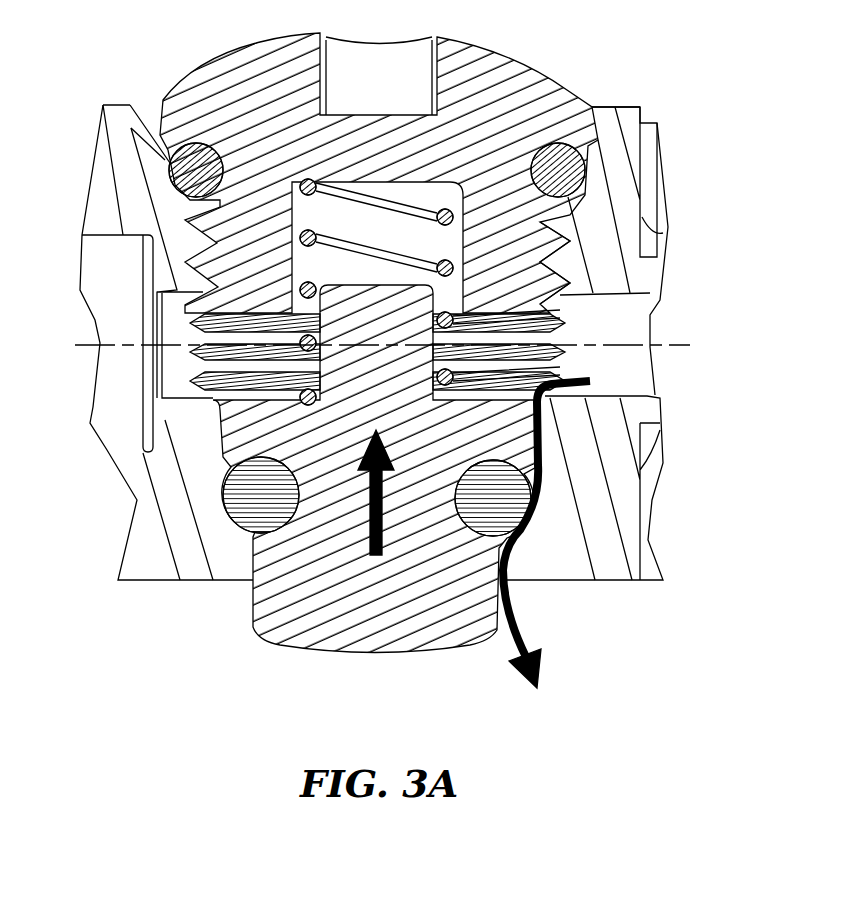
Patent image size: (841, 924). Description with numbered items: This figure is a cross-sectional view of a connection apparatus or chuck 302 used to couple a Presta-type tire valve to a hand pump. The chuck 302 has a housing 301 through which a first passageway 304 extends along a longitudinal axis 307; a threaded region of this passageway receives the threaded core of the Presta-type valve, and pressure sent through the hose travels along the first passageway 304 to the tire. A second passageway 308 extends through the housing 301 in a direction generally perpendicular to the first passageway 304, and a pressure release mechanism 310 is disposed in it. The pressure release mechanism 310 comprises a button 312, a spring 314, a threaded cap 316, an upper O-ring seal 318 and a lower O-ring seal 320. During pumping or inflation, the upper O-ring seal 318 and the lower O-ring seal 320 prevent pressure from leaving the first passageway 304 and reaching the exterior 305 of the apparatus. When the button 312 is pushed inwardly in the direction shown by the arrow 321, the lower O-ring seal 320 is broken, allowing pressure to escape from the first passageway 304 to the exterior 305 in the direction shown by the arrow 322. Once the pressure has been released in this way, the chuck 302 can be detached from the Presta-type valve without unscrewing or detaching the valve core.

The housing 301 is at (613, 157).
The connection apparatus or chuck 302 is at (641, 61).
The first passageway 304 is at (637, 380).
The exterior 305 is at (394, 747).
The longitudinal axis 307 is at (672, 345).
The second passageway 308 is at (537, 235).
The pressure release mechanism 310 is at (183, 663).
The button 312 is at (303, 645).
The spring 314 is at (430, 200).
The threaded cap 316 is at (242, 66).
The upper O-ring seal 318 is at (133, 105).
The lower O-ring seal 320 is at (228, 472).
The arrow indicating button push direction 321 is at (375, 500).
The arrow indicating pressure escape direction 322 is at (520, 610).